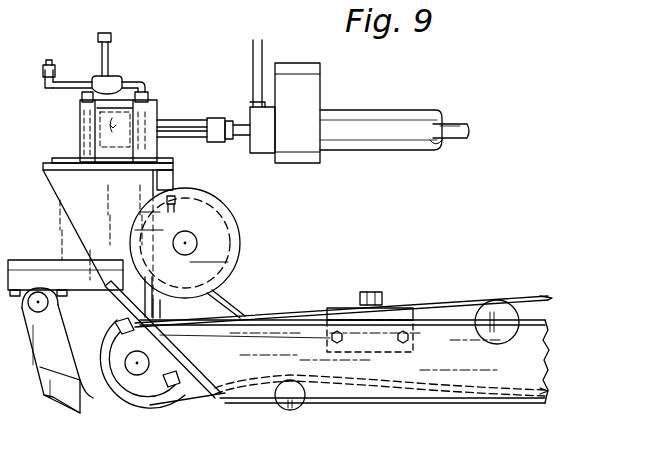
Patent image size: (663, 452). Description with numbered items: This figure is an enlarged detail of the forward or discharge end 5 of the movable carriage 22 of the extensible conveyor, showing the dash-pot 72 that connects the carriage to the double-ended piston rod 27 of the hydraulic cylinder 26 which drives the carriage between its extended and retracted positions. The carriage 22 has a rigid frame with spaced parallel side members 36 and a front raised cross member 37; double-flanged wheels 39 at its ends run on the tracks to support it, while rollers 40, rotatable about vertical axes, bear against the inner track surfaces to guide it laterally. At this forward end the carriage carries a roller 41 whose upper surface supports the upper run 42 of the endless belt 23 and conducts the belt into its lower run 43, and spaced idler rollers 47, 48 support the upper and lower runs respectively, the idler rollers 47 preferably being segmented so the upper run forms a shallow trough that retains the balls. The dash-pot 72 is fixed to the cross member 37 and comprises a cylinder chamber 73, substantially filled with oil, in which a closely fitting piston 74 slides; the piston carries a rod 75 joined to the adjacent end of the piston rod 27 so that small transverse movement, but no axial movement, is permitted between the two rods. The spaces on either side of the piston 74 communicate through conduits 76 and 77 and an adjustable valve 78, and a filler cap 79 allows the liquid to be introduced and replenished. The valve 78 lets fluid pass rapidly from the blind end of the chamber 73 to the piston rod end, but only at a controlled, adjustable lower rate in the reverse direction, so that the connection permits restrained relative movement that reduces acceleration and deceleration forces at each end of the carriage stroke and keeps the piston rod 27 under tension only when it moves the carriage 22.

The discharge end 5 is at (100, 398).
The movable carriage 22 is at (358, 403).
The endless conveyor belt 23 is at (522, 294).
The hydraulic cylinder 26 is at (386, 114).
The piston rod 27 is at (236, 118).
The side members 36 is at (546, 368).
The front raised cross member 37 is at (60, 155).
The double-flanged wheels 39 is at (240, 241).
The rollers 40 is at (370, 292).
The roller 41 is at (143, 402).
The upper run 42 is at (452, 295).
The lower run 43 is at (427, 392).
The idler rollers 47 is at (516, 316).
The idler rollers 48 is at (278, 408).
The dash-pot 72 is at (158, 105).
The cylinder chamber 73 is at (82, 118).
The piston 74 is at (148, 143).
The rod 75 is at (200, 138).
The conduit 76 is at (95, 78).
The conduit 77 is at (128, 82).
The adjustable valve 78 is at (113, 44).
The filler cap 79 is at (46, 60).